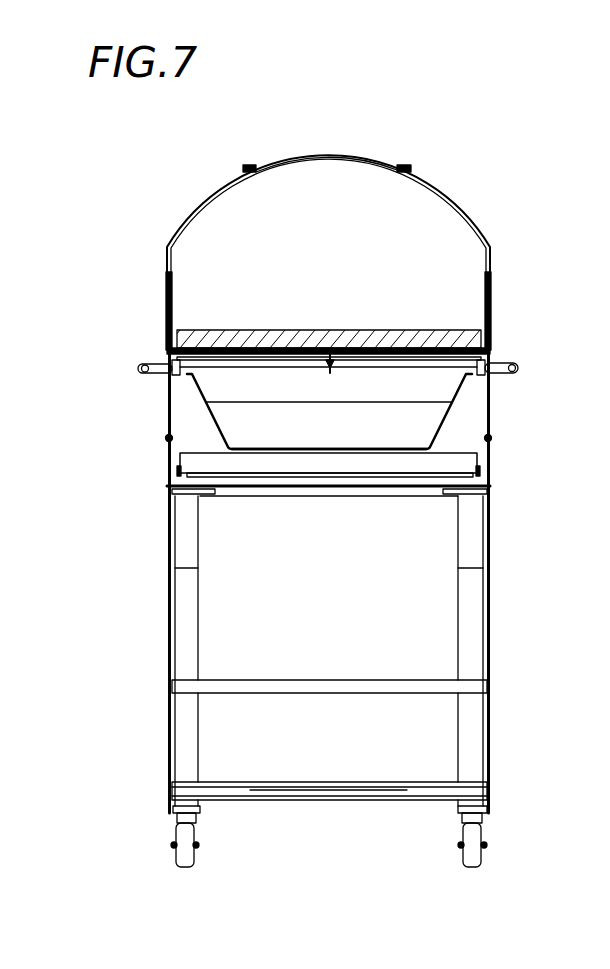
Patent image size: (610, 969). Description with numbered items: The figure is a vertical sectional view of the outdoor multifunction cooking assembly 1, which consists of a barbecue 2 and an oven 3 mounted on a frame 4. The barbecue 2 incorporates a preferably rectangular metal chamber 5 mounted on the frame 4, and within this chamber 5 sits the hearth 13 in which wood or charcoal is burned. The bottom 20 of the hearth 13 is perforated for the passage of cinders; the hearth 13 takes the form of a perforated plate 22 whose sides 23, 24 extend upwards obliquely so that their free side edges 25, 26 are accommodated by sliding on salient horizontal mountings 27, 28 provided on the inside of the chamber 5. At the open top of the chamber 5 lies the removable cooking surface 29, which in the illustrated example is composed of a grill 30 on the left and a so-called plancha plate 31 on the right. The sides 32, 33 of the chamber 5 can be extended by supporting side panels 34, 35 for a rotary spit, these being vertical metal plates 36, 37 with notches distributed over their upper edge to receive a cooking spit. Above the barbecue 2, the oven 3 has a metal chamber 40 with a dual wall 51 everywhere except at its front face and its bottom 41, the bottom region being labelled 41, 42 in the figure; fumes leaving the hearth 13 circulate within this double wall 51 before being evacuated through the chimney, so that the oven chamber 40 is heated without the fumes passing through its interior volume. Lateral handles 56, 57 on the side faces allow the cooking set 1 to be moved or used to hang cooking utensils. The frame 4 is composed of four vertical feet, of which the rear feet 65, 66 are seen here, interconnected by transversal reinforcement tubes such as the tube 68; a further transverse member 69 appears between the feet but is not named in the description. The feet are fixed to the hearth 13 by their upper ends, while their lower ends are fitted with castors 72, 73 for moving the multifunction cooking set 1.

The multifunction cooking assembly 1 is at (517, 110).
The barbecue 2 is at (128, 427).
The oven 3 is at (125, 287).
The frame 4 is at (523, 645).
The chamber 5 is at (157, 452).
The hearth 13 is at (440, 438).
The bottom of the hearth 20 is at (485, 312).
The perforated plate 22 is at (420, 428).
The side of the perforated plate 23 is at (190, 420).
The side of the perforated plate 24 is at (480, 456).
The free side edge 25 is at (172, 345).
The free side edge 26 is at (492, 346).
The salient horizontal mounting 27 is at (170, 380).
The salient horizontal mounting 28 is at (482, 380).
The cooking surface 29 is at (262, 345).
The grill 30 is at (305, 335).
The plancha plate 31 is at (365, 332).
The side of the chamber 32 is at (167, 476).
The side of the chamber 33 is at (490, 488).
The supporting side panel 34 is at (102, 311).
The supporting side panel 35 is at (547, 304).
The vertical metal plate 36 is at (165, 300).
The vertical metal plate 37 is at (492, 282).
The metal chamber of the oven 40 is at (298, 157).
The bottom of the oven chamber 41 is at (434, 242).
The grate section 42 is at (352, 330).
The dual wall 51 is at (328, 157).
The lateral handle 56 is at (140, 368).
The lateral handle 57 is at (518, 367).
The rear foot 65 is at (185, 728).
The rear foot 66 is at (474, 727).
The transversal reinforcement tube 68 is at (333, 788).
The cross bar 69 is at (355, 683).
The castor 72 is at (180, 835).
The castor 73 is at (474, 845).